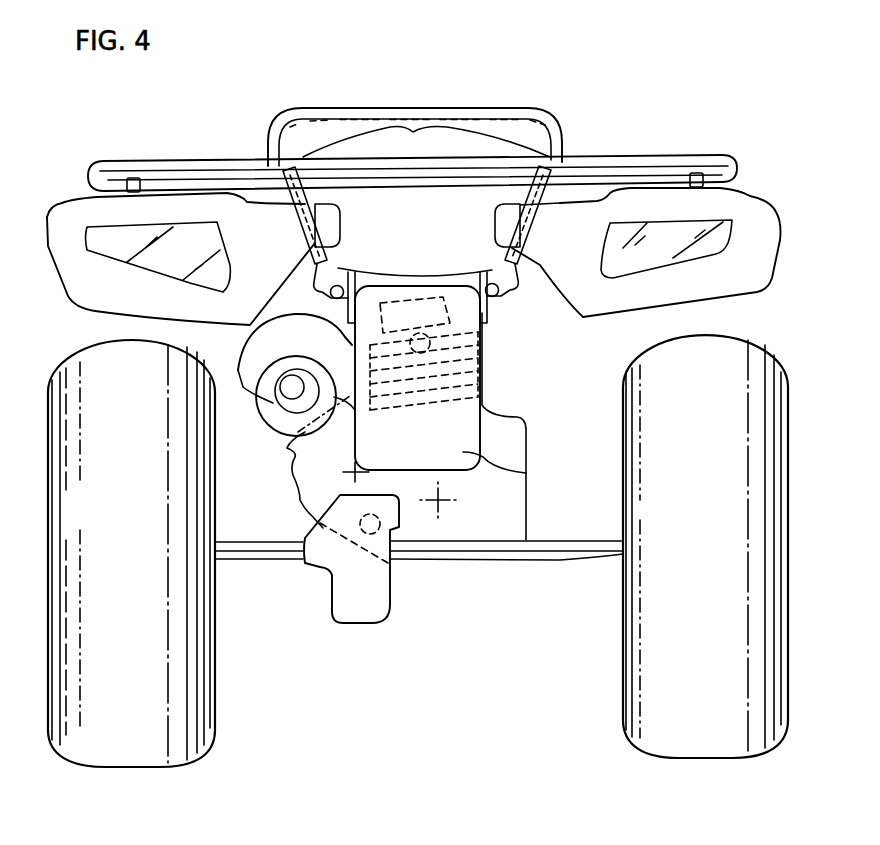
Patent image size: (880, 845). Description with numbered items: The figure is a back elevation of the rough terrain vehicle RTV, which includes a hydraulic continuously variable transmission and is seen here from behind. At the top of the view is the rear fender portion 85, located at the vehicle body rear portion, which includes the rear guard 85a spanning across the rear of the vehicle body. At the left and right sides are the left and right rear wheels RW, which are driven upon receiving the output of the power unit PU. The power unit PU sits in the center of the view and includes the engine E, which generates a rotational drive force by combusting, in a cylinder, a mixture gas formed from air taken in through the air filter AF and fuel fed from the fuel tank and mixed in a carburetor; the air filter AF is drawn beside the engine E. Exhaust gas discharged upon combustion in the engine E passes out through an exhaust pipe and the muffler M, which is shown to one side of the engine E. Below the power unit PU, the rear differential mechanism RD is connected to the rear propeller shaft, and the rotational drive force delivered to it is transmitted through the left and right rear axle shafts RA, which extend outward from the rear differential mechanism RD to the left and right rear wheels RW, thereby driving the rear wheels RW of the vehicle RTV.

The rear fender portion 85 is at (490, 193).
The rear guard 85a is at (672, 160).
The rough terrain vehicle RTV is at (773, 164).
The rear wheels RW is at (730, 362).
The engine E is at (483, 353).
The power unit PU is at (515, 412).
The air filter AF is at (526, 473).
The muffler M is at (275, 413).
The rear axle shafts RA is at (258, 558).
The rear differential mechanism RD is at (377, 610).